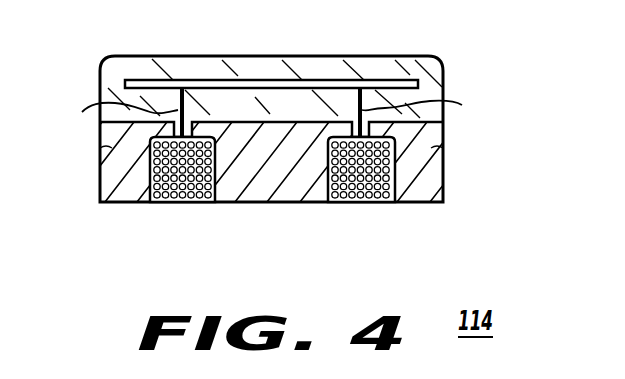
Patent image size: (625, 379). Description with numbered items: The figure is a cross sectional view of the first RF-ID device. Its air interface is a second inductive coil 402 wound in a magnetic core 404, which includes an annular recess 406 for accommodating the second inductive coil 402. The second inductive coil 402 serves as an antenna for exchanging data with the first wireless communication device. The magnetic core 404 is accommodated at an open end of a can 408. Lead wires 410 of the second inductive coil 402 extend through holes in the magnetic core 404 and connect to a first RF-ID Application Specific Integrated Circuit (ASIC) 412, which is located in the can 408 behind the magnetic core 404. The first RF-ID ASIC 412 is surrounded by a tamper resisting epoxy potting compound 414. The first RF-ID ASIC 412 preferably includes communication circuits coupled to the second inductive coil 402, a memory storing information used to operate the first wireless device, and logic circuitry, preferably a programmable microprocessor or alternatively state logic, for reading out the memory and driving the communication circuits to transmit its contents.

The second inductive coil 402 is at (168, 203).
The magnetic core 404 is at (100, 182).
The annular recess 406 is at (278, 203).
The can 408 is at (100, 148).
The lead wires 410 is at (270, 112).
The first RF-ID Application Specific Integrated Circuit (ASIC) 412 is at (259, 78).
The tamper resisting epoxy potting compound 414 is at (393, 63).